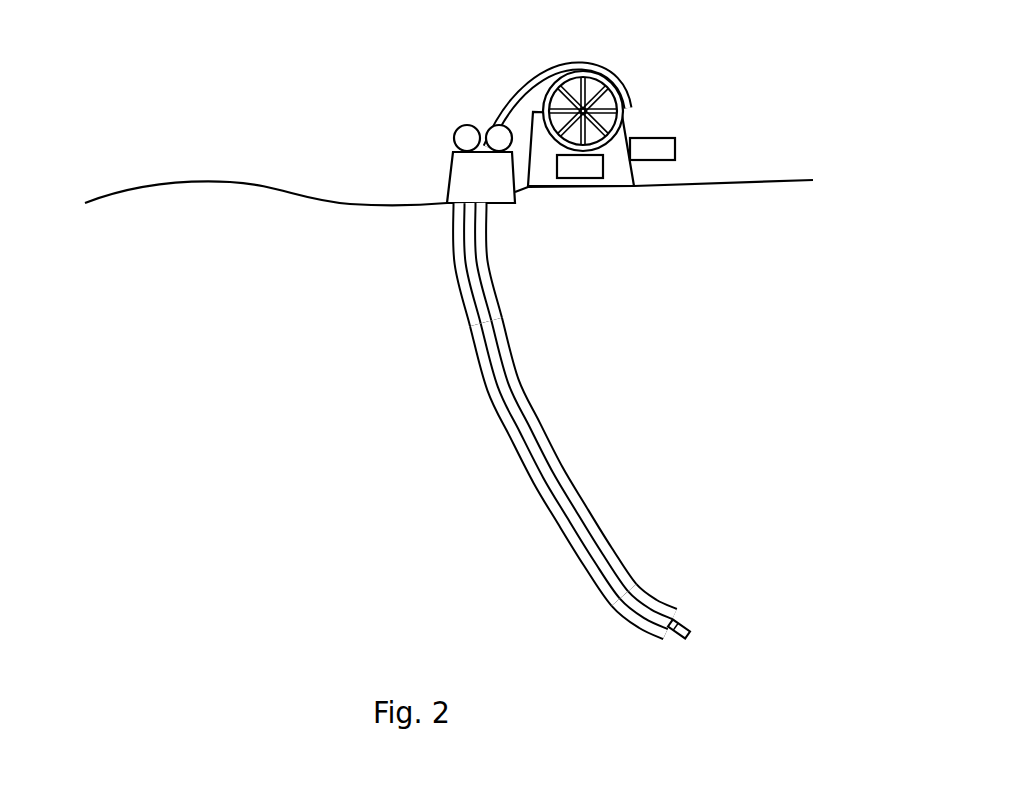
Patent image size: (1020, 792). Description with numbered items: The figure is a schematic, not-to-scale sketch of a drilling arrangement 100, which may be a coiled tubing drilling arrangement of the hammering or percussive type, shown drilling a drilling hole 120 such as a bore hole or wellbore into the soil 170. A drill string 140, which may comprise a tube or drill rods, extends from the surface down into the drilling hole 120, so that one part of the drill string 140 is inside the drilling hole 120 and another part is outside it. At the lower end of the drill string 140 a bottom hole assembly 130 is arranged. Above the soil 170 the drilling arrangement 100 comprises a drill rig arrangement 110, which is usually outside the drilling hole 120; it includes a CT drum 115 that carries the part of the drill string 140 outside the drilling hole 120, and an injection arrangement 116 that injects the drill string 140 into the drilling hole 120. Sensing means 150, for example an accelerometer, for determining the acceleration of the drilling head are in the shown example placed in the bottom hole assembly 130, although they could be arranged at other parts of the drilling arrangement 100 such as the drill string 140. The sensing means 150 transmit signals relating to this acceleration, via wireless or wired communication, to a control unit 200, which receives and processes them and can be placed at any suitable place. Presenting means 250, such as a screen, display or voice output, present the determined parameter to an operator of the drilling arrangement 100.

The drilling arrangement 100 is at (449, 390).
The drill rig arrangement 110 is at (560, 160).
The CT drum 115 is at (629, 123).
The injection arrangement 116 is at (501, 209).
The drilling hole 120 is at (576, 472).
The bottom hole assembly 130 is at (686, 628).
The drill string 140 is at (466, 240).
The sensing means 150 is at (666, 632).
The soil 170 is at (142, 188).
The control unit 200 is at (589, 186).
The presenting means 250 is at (681, 158).